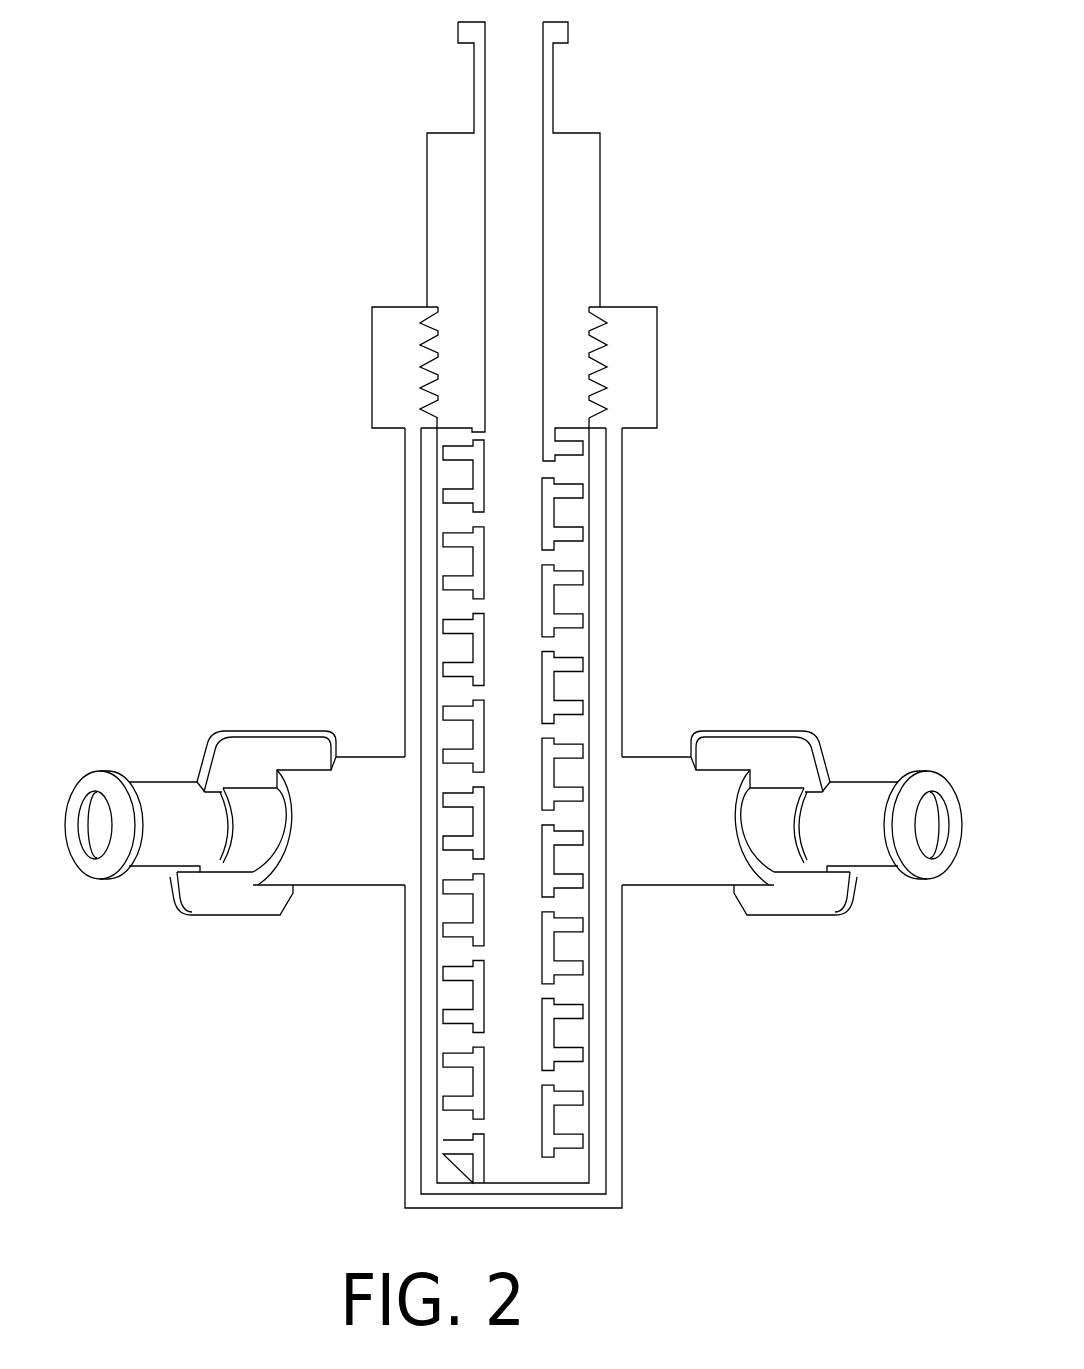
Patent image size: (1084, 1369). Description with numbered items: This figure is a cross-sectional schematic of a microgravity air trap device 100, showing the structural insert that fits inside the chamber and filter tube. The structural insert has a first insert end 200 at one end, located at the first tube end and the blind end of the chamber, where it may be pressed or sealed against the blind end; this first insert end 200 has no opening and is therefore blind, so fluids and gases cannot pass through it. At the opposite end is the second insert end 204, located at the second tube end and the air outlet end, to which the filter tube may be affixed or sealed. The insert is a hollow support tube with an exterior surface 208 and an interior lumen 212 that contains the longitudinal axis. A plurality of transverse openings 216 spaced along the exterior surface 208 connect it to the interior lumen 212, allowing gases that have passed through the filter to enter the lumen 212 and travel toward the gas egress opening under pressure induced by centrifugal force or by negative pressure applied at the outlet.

The microgravity air trap device 100 is at (265, 75).
The first insert end 200 is at (447, 1188).
The second insert end 204 is at (568, 427).
The exterior surface 208 is at (473, 552).
The interior lumen 212 is at (515, 513).
The transverse openings 216 is at (553, 557).